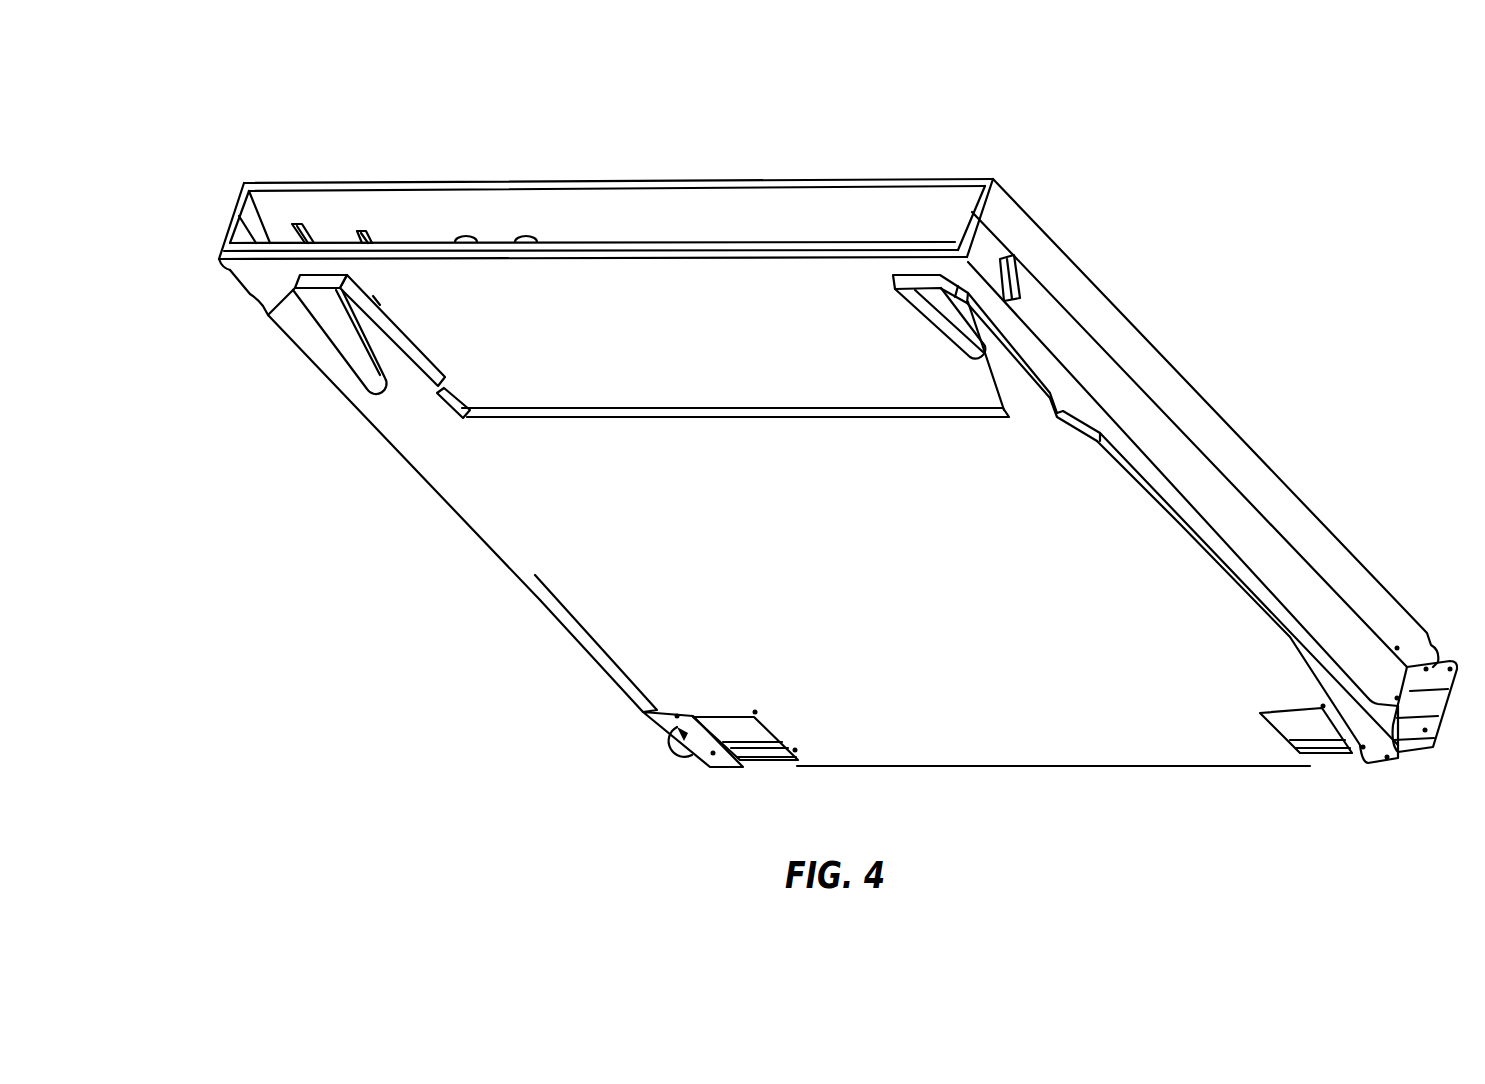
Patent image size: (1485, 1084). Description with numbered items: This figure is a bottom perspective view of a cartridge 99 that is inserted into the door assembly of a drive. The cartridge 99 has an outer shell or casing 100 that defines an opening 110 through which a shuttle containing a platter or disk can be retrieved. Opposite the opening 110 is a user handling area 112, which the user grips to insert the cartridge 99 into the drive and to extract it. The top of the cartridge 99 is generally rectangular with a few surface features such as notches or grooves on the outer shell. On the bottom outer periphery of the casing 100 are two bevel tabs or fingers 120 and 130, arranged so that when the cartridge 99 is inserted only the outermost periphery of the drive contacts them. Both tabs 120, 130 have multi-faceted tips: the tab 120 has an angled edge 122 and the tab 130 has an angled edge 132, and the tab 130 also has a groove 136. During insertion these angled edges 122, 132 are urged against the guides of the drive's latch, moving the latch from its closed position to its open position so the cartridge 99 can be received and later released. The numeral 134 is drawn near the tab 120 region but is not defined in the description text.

The cartridge 99 is at (374, 98).
The outer shell or casing 100 is at (930, 599).
The opening 110 is at (600, 210).
The user handling area 112 is at (1167, 741).
The bevel tab 120 is at (380, 343).
The angled edge 122 is at (349, 280).
The bevel tab 130 is at (953, 346).
The angled edge 132 is at (968, 287).
The latch tongue 134 is at (350, 357).
The groove 136 is at (933, 297).